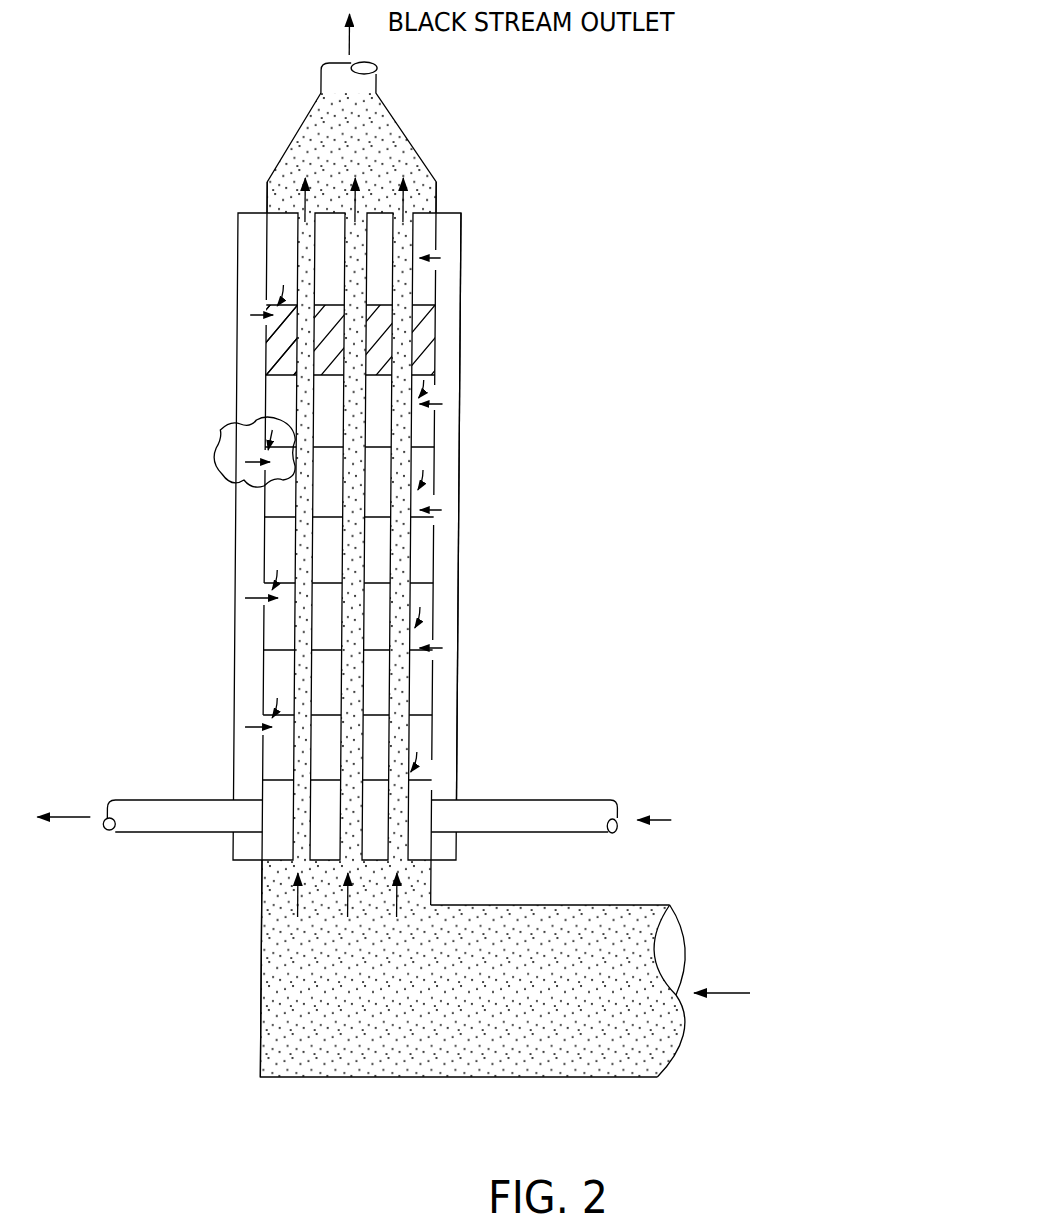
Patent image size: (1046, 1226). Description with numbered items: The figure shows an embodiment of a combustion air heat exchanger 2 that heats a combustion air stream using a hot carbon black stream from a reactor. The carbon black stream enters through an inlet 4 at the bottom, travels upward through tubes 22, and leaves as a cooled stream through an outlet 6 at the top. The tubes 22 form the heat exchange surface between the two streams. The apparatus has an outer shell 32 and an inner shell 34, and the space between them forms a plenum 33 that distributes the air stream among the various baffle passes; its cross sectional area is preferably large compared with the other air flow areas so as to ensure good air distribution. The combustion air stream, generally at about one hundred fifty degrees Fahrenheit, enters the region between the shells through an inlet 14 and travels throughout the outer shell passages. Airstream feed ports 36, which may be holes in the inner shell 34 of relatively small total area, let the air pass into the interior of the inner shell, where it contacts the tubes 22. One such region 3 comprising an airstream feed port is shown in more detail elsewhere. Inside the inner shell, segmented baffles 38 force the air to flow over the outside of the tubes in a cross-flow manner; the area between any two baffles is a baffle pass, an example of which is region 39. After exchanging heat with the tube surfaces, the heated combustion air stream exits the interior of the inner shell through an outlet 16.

The outlet 6 is at (364, 63).
The combustion air heat exchanger 2 is at (461, 261).
The outer shell 32 is at (463, 357).
The plenum 33 is at (449, 389).
The inner shell 34 is at (438, 423).
The airstream feed ports 36 is at (444, 522).
The segmented baffles 38 is at (376, 584).
The tubes 22 is at (409, 677).
The baffle pass 39 is at (271, 330).
The region comprising an airstream feed port 3 is at (228, 470).
The outlet 16 is at (110, 814).
The inlet 14 is at (625, 806).
The inlet 4 is at (705, 925).